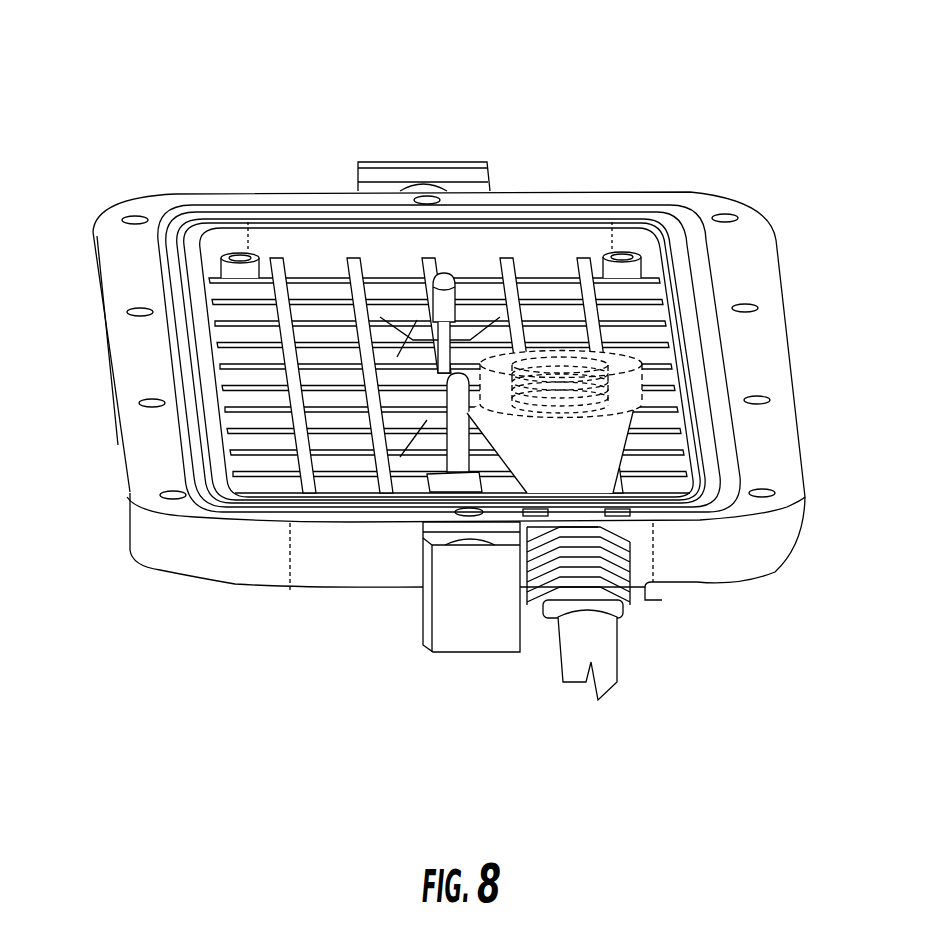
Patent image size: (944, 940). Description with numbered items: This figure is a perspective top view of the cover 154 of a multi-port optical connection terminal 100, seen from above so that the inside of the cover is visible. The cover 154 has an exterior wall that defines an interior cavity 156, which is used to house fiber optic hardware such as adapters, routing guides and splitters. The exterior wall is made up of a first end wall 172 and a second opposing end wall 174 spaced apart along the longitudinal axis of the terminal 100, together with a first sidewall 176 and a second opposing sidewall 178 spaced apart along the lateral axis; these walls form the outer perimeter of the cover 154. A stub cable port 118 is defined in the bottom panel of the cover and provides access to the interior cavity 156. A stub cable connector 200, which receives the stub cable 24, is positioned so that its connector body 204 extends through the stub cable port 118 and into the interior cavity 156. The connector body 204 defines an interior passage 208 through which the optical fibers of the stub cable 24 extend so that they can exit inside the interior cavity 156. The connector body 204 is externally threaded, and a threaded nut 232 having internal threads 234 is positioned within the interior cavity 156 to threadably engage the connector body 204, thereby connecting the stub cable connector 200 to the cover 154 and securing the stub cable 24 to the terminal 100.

The multi-port optical connection terminal 100 is at (741, 91).
The cover 154 is at (99, 344).
The interior cavity 156 is at (449, 249).
The first end wall 172 is at (325, 561).
The second opposing end wall 174 is at (600, 191).
The first sidewall 176 is at (118, 446).
The second opposing sidewall 178 is at (803, 410).
The stub cable connector 200 is at (625, 599).
The connector body 204 is at (579, 352).
The interior passage 208 is at (548, 349).
The threaded nut 232 is at (643, 380).
The internal threads 234 is at (491, 398).
The stub cable port 118 is at (615, 400).
The stub cable 24 is at (579, 654).